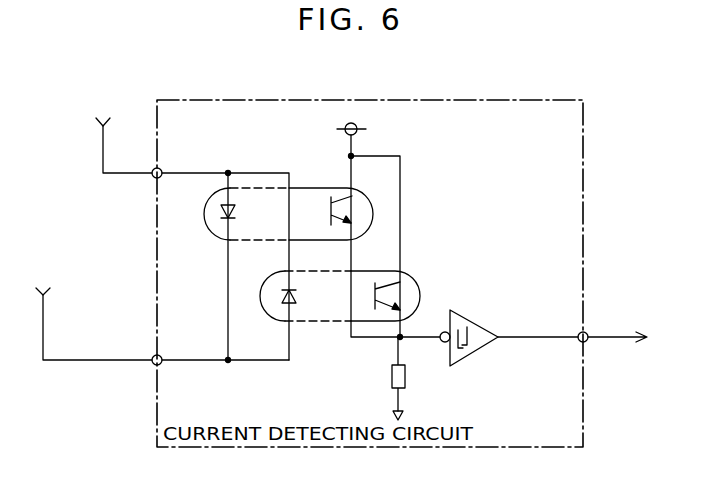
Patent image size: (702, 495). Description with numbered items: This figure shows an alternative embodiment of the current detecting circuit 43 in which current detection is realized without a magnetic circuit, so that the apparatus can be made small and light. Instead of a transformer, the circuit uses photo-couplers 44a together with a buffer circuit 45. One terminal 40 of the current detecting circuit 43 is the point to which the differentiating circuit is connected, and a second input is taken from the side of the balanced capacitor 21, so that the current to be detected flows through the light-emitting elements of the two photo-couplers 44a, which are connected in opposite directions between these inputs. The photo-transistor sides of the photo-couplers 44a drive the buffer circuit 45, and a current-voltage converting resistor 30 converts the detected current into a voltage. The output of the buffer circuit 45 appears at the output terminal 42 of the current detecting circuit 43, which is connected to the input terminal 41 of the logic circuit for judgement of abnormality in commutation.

The balanced capacitor 21 is at (95, 312).
The current-voltage converting resistor 30 is at (406, 378).
The terminal of the current detecting circuit 40 is at (154, 178).
The input terminal of the logic circuit for judgement of abnormality in commutation 41 is at (634, 338).
The output terminal of the current detecting circuit 42 is at (586, 332).
The current detecting circuit 43 is at (350, 447).
The photo-coupler 44a is at (212, 237).
The buffer circuit 45 is at (478, 321).